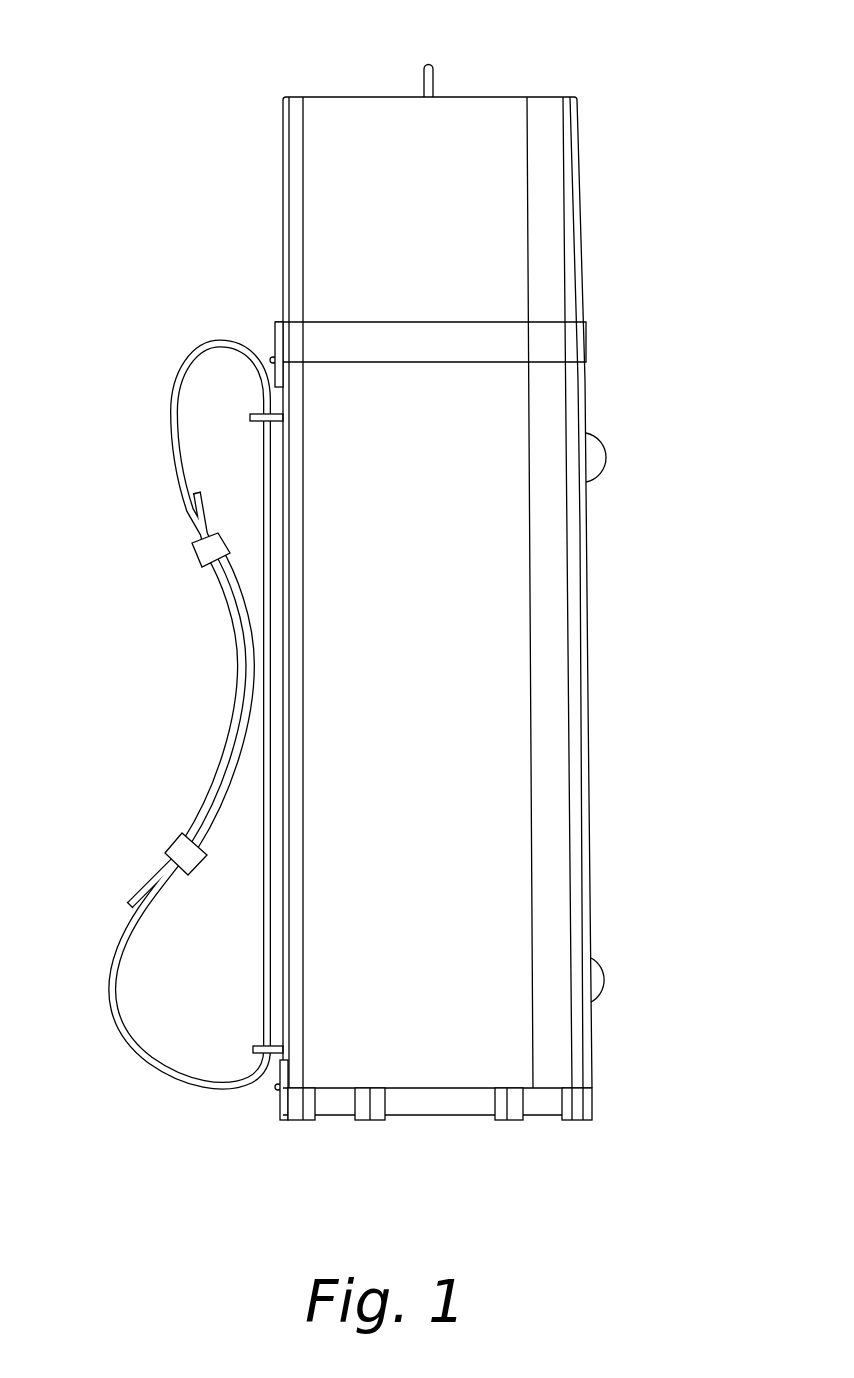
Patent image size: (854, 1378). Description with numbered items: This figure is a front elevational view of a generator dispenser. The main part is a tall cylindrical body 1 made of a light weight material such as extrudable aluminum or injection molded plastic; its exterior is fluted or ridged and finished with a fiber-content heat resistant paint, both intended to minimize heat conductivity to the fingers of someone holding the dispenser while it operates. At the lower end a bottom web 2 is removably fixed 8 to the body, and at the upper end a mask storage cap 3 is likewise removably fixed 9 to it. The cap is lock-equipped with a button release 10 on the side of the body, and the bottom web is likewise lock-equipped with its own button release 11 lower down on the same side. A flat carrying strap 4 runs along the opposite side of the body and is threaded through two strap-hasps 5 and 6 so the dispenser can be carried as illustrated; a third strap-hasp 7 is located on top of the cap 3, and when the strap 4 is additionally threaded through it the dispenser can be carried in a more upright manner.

The cylindrical body 1 is at (594, 620).
The bottom web 2 is at (597, 1105).
The mask storage cap 3 is at (585, 200).
The flat carrying strap 4 is at (170, 455).
The strap-hasp 5 is at (251, 1043).
The strap-hasp 6 is at (247, 420).
The strap-hasp 7 is at (437, 76).
The removable fixing of bottom web 8 is at (273, 1093).
The removable fixing of mask storage cap 9 is at (272, 334).
The button release 10 is at (606, 458).
The button release 11 is at (607, 980).